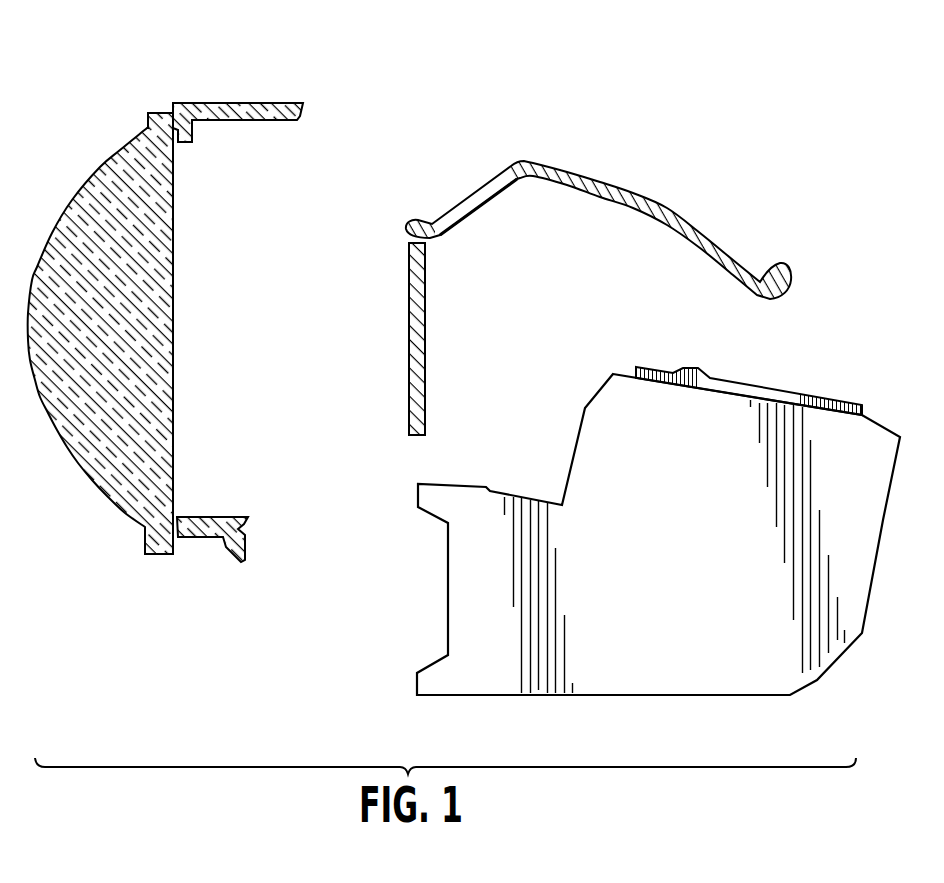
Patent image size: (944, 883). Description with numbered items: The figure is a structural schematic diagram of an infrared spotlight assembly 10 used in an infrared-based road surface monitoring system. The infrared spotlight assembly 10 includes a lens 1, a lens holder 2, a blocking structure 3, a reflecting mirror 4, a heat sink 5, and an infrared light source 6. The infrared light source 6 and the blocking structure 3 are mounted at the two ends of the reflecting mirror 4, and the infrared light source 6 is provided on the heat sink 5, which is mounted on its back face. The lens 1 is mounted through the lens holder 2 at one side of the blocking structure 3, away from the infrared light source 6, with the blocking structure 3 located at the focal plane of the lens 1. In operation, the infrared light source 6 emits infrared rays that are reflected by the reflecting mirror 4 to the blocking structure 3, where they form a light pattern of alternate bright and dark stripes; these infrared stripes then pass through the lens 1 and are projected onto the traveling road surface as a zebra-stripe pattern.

The infrared spotlight assembly 10 is at (155, 50).
The lens 1 is at (174, 320).
The lens holder 2 is at (255, 101).
The blocking structure 3 is at (408, 319).
The reflecting mirror 4 is at (660, 204).
The heat sink 5 is at (453, 593).
The infrared light source 6 is at (760, 385).